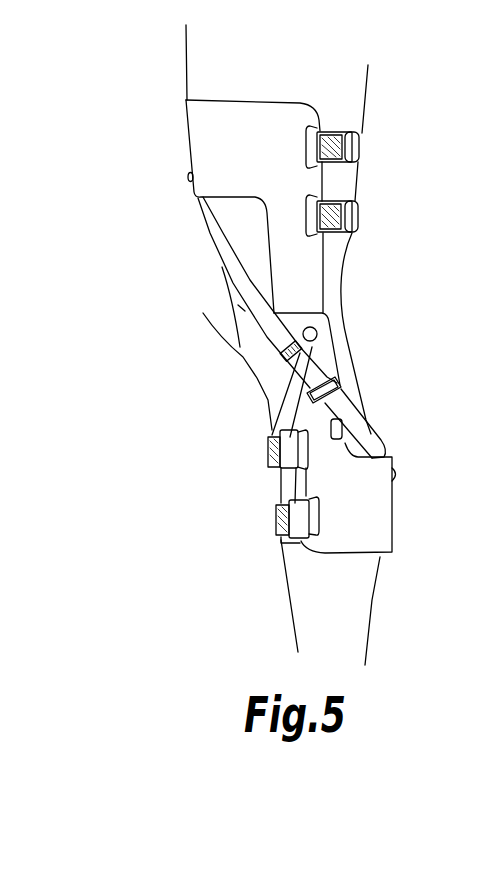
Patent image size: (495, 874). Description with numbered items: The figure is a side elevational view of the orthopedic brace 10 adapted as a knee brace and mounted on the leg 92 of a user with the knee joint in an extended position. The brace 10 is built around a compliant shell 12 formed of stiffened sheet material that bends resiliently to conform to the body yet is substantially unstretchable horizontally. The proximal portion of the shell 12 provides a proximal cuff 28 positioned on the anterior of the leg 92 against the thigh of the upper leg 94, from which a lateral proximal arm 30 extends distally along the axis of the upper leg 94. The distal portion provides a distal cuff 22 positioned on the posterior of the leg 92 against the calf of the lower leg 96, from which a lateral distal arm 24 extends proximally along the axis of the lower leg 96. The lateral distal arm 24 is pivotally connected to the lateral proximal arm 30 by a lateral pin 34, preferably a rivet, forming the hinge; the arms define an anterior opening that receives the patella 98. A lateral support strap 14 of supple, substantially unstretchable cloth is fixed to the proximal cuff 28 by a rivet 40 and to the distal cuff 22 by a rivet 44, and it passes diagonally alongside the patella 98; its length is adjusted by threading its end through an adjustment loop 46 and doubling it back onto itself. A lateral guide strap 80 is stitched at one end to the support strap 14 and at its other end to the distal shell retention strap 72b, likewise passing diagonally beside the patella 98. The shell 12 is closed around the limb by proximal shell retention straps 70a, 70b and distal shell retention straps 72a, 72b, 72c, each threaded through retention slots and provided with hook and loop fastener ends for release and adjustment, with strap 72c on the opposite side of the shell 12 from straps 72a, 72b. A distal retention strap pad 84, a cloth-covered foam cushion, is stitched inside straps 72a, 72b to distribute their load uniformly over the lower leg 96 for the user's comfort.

The brace 10 is at (122, 242).
The shell 12 is at (312, 280).
The lateral support strap 14 is at (212, 233).
The distal cuff 22 is at (383, 517).
The lateral distal arm 24 is at (282, 394).
The proximal cuff 28 is at (198, 116).
The lateral proximal arm 30 is at (312, 252).
The lateral pin 34 is at (318, 330).
The rivet 40 is at (188, 175).
The rivet 44 is at (398, 470).
The adjustment loop 46 is at (340, 367).
The proximal shell retention strap 70a is at (352, 147).
The proximal shell retention strap 70b is at (352, 211).
The distal shell retention strap 72a is at (277, 520).
The distal shell retention strap 72b is at (267, 452).
The distal shell retention strap 72c is at (373, 422).
The lateral guide strap 80 is at (297, 384).
The distal retention strap pad 84 is at (272, 488).
The leg 92 is at (208, 54).
The upper leg 94 is at (345, 84).
The lower leg 96 is at (362, 581).
The patella 98 is at (236, 466).